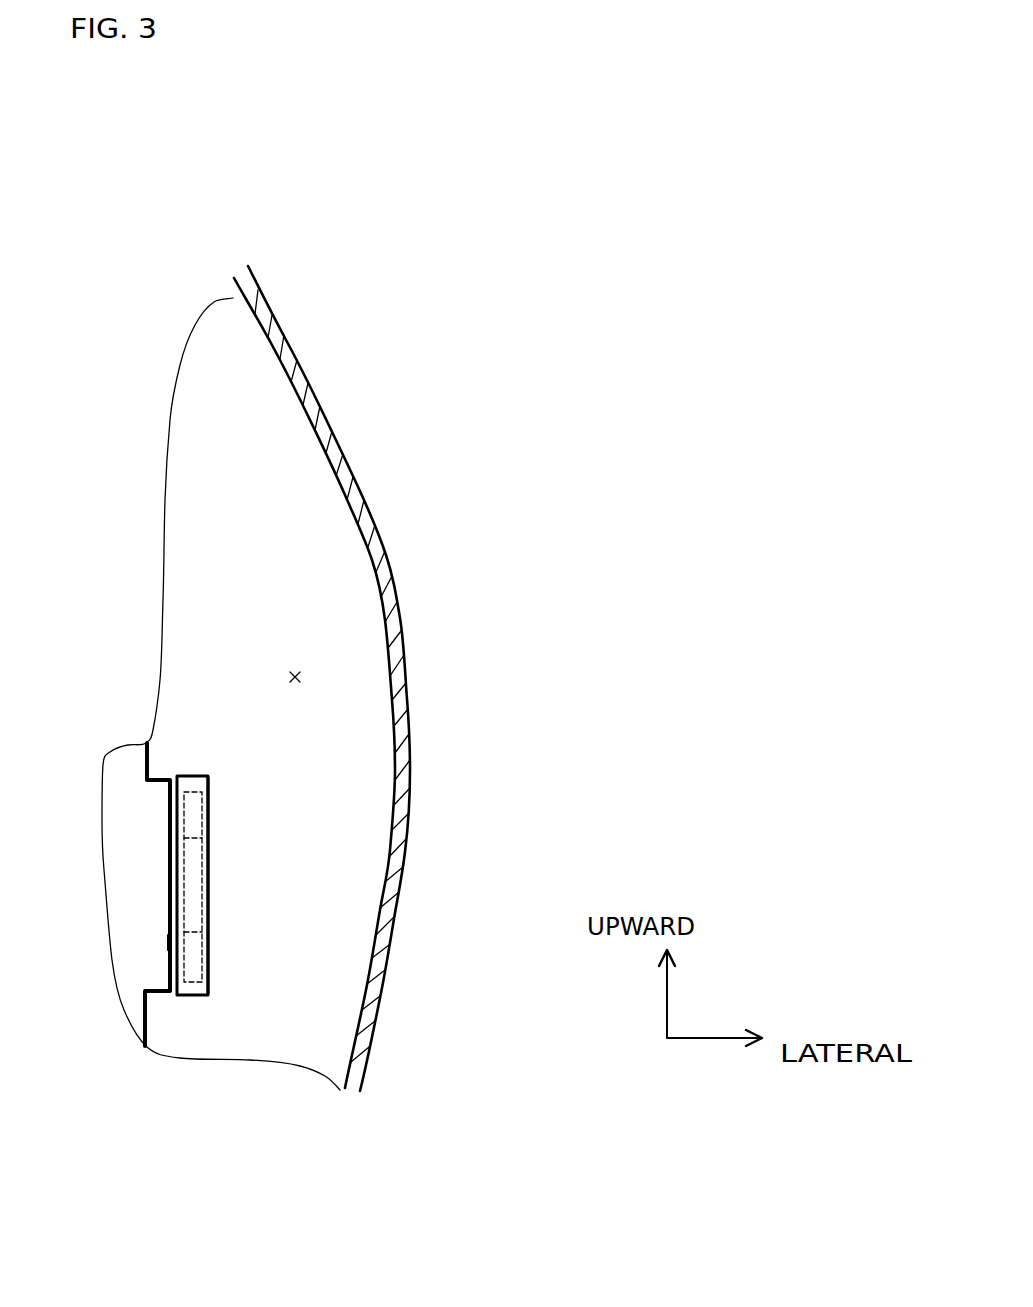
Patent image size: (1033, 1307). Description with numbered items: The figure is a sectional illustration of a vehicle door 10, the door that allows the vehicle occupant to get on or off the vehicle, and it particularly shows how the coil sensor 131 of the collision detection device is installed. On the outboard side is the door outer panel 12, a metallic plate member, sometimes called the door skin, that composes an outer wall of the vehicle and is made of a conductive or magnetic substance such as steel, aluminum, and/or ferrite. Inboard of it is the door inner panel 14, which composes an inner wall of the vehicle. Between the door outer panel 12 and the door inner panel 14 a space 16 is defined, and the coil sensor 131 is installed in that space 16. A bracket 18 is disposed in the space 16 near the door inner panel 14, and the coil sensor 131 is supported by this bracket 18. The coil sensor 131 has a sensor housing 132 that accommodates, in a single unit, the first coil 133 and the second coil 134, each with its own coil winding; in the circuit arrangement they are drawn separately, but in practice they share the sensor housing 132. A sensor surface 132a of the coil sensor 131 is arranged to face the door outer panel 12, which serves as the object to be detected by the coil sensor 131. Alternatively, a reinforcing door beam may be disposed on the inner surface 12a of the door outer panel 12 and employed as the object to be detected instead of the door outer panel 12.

The vehicle door 10 is at (382, 417).
The door outer panel 12 is at (365, 678).
The inner surface of the door outer panel 12a is at (386, 893).
The door inner panel 14 is at (163, 593).
The space 16 is at (297, 674).
The coil sensor 131 is at (186, 774).
The sensor housing 132 is at (180, 986).
The sensor surface 132a is at (208, 790).
The first coil 133 is at (196, 818).
The second coil 134 is at (190, 876).
The bracket 18 is at (168, 942).